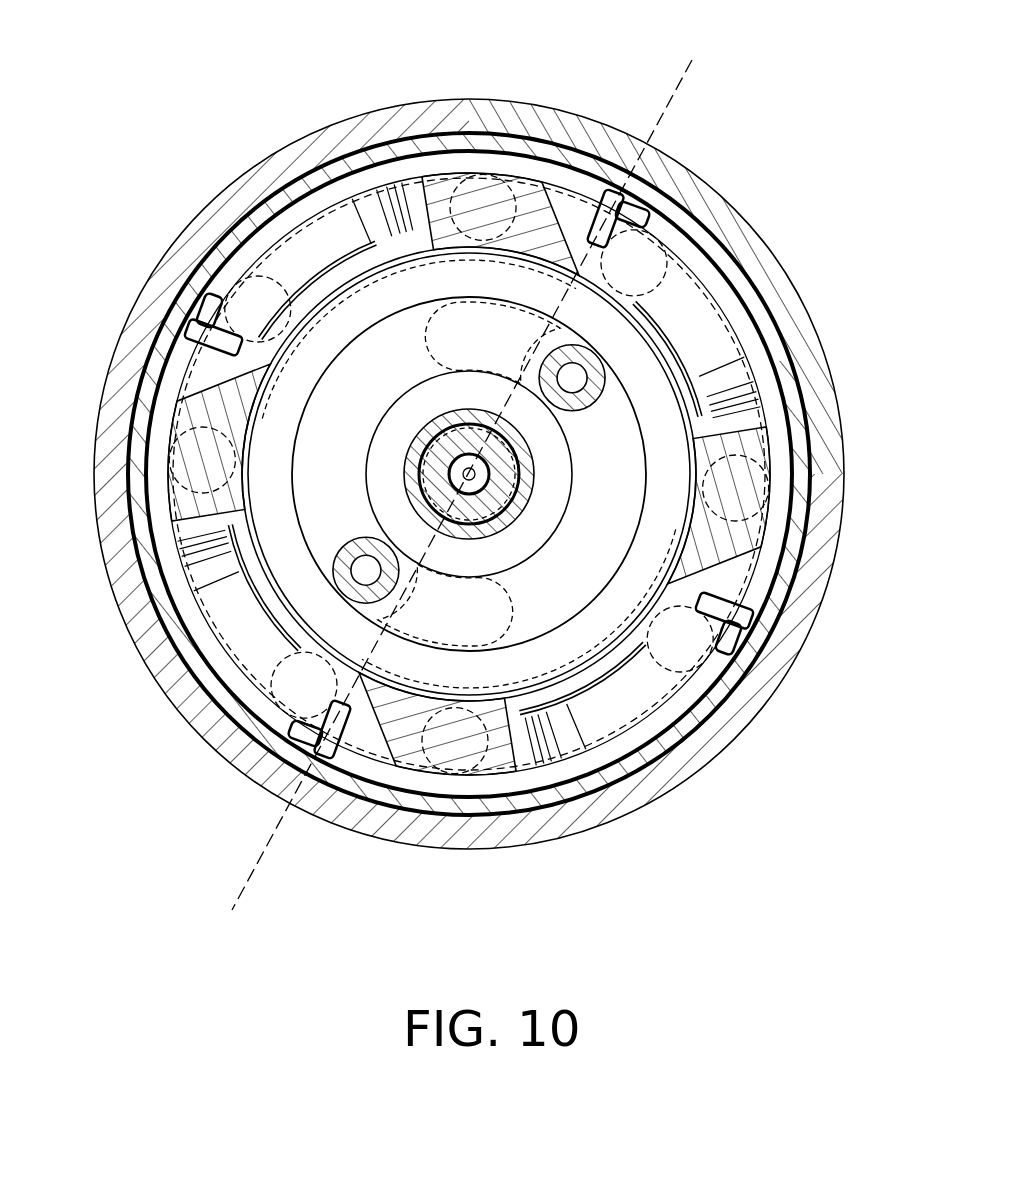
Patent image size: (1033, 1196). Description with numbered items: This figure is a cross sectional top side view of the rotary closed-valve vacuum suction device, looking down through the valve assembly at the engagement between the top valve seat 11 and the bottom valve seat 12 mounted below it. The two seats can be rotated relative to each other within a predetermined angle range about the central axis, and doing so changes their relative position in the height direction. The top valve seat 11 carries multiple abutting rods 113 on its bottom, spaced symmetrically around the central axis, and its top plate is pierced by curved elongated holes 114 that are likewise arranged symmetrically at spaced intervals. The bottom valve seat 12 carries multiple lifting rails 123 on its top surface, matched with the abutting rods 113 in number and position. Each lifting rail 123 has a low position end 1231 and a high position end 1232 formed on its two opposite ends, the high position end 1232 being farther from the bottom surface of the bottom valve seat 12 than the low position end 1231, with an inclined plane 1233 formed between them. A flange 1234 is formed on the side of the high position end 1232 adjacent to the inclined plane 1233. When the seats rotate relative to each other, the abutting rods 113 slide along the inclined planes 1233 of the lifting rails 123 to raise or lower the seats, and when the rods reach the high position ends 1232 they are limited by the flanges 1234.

The top valve seat 11 is at (530, 98).
The bottom valve seat 12 is at (470, 132).
The abutting rods 113 is at (603, 207).
The curved elongated holes 114 is at (197, 212).
The lifting rails 123 is at (310, 256).
The low position end 1231 is at (227, 320).
The high position end 1232 is at (405, 198).
The inclined plane 1233 is at (280, 262).
The flange 1234 is at (370, 203).